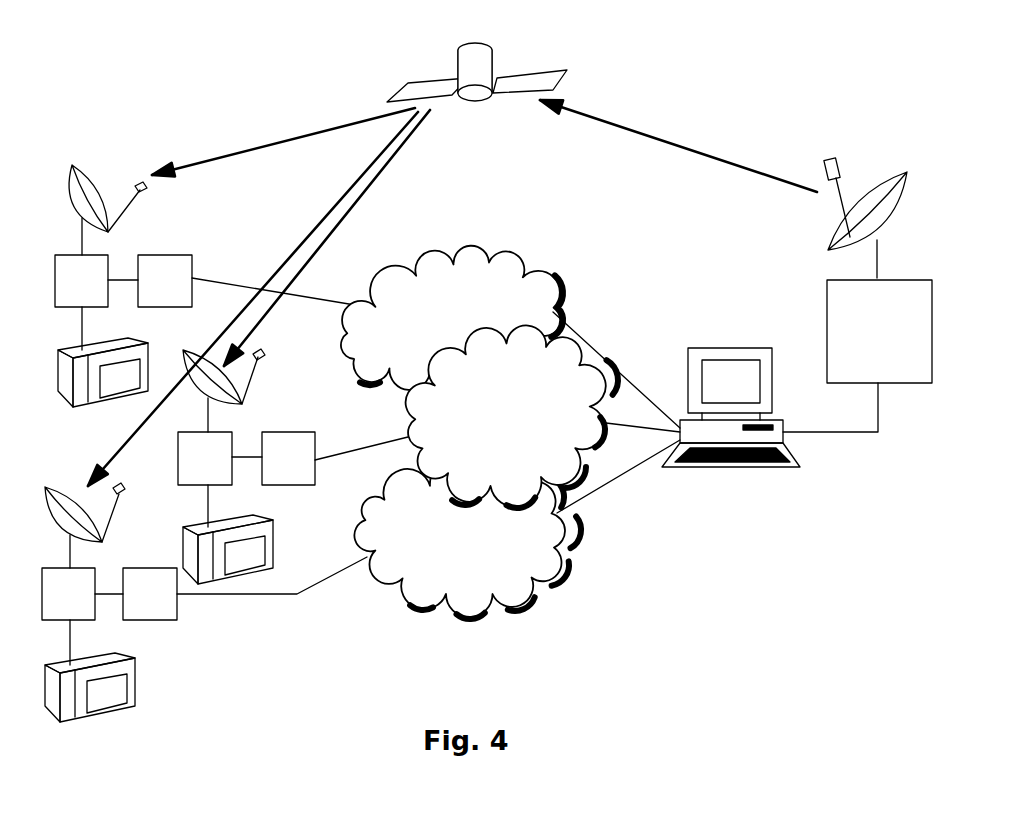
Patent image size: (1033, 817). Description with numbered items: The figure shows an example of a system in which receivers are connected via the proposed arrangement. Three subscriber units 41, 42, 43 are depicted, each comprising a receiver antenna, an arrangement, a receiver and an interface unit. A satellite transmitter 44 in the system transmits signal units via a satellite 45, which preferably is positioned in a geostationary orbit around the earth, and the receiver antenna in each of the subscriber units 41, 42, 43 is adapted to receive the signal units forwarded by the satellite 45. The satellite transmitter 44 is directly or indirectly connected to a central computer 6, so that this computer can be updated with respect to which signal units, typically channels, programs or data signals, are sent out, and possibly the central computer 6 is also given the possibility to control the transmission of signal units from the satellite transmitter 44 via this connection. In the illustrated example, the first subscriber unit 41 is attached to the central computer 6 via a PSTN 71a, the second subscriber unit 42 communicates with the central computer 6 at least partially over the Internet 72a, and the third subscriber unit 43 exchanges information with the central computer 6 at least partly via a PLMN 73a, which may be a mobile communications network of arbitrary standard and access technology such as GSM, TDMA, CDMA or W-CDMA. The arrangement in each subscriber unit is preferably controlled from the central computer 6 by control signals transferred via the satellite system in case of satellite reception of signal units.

The satellite 45 is at (496, 58).
The first subscriber unit 41 is at (149, 228).
The second subscriber unit 42 is at (280, 504).
The third subscriber unit 43 is at (164, 654).
The satellite transmitter 44 is at (827, 307).
The central computer 6 is at (730, 347).
The PSTN 71a is at (482, 248).
The Internet 72a is at (402, 413).
The PLMN 73a is at (577, 553).